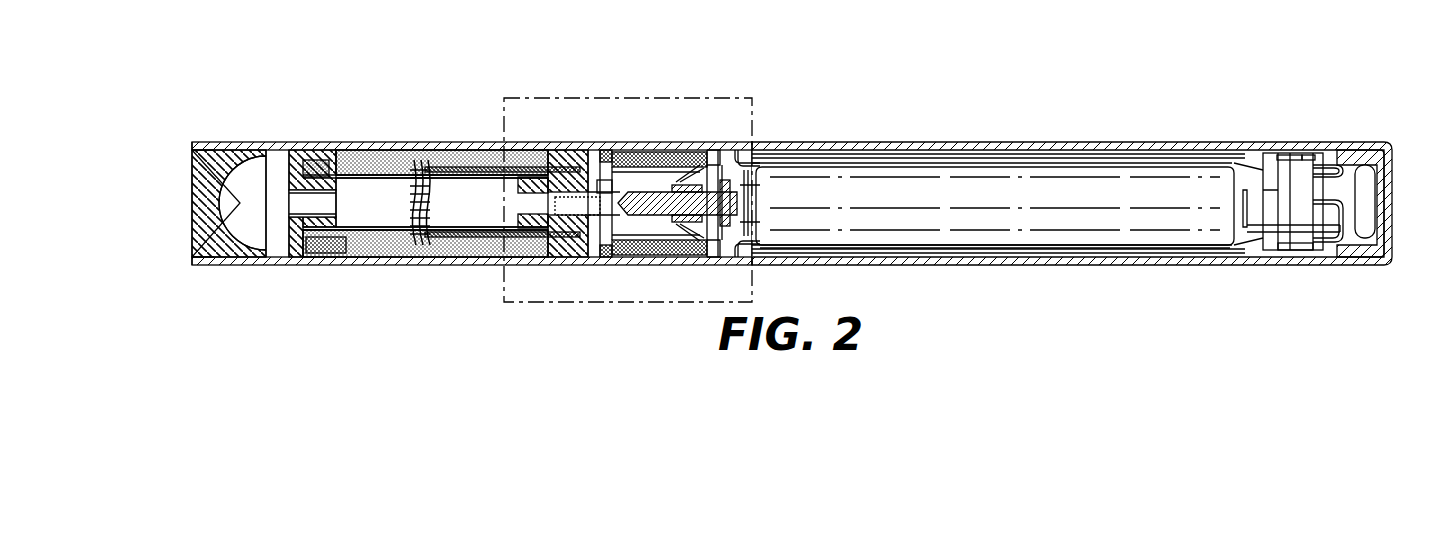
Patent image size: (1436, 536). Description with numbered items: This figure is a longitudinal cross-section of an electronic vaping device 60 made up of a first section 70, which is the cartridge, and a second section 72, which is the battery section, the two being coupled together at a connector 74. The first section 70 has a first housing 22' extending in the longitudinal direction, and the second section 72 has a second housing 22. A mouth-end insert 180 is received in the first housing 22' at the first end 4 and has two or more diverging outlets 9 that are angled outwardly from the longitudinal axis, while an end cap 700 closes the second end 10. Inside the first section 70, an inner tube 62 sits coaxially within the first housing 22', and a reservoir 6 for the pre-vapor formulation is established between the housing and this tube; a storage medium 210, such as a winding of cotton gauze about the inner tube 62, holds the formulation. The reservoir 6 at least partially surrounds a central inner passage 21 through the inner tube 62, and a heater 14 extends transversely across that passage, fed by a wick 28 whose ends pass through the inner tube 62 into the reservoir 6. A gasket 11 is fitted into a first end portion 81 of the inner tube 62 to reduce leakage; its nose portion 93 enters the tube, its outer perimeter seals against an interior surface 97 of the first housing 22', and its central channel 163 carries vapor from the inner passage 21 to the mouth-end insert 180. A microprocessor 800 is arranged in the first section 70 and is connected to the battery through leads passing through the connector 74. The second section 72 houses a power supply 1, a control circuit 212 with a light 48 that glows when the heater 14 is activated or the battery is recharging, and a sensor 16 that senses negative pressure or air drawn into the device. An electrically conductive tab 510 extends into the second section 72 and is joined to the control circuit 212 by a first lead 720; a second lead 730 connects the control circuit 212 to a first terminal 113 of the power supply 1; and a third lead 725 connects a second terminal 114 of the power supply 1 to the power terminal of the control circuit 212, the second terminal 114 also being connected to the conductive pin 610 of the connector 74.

The power supply 1 is at (1113, 216).
The first end 4 is at (183, 110).
The reservoir 6 is at (364, 245).
The outlets 9 is at (192, 237).
The second end 10 is at (1377, 118).
The gasket 11 is at (298, 258).
The heater 14 is at (426, 195).
The sensor 16 is at (1285, 157).
The central inner passage 21 is at (380, 216).
The second housing 22 is at (1072, 186).
The first housing 22' is at (472, 185).
The wick 28 is at (432, 245).
The light 48 is at (1366, 202).
The electronic vaping device 60 is at (905, 100).
The inner tube 62 is at (385, 243).
The first section 70 is at (372, 142).
The second section 72 is at (1037, 142).
The connector 74 is at (672, 98).
The first end portion 81 is at (296, 250).
The nose portion 93 is at (320, 180).
The interior surface 97 is at (276, 158).
The first terminal 113 is at (1240, 198).
The second terminal 114 is at (743, 203).
The central channel 163 is at (308, 202).
The mouth-end insert 180 is at (192, 265).
The storage medium 210 is at (393, 168).
The control circuit 212 is at (1300, 155).
The electrically conductive tab 510 is at (730, 182).
The conductive pin 610 is at (730, 215).
The end cap 700 is at (1386, 235).
The first lead 720 is at (1115, 160).
The third lead 725 is at (1096, 250).
The second lead 730 is at (1258, 240).
The microprocessor 800 is at (613, 187).